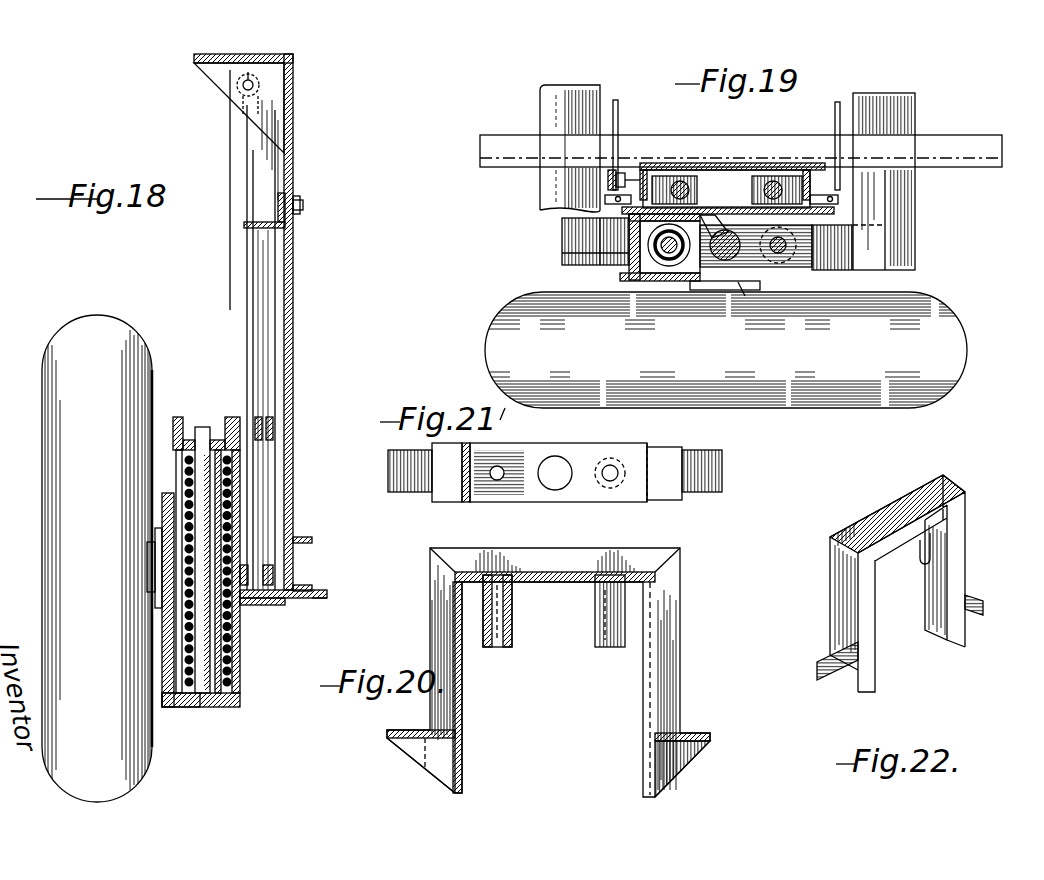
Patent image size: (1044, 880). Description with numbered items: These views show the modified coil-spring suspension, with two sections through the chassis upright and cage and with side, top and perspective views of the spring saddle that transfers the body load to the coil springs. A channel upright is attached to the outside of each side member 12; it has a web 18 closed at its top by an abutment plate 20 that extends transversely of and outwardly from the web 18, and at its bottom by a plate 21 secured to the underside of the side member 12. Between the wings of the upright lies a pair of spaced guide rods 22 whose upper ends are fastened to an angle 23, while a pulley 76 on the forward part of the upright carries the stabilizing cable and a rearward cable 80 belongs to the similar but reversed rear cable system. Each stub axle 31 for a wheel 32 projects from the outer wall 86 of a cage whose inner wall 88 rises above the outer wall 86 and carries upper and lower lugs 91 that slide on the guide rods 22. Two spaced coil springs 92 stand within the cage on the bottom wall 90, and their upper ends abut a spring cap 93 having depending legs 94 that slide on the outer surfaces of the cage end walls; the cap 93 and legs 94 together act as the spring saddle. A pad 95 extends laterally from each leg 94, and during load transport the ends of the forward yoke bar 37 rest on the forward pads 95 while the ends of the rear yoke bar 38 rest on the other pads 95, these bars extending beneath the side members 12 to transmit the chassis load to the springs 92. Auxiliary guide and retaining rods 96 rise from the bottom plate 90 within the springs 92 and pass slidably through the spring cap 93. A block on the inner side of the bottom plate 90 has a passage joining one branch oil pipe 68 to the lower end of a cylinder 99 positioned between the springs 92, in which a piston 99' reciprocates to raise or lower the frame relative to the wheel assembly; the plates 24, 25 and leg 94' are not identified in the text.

In FIG. 18, the side member 12 is at (312, 540).
In FIG. 19, the side member 12 is at (975, 140).
In FIG. 18, the web 18 is at (293, 342).
In FIG. 19, the web 18 is at (710, 165).
In FIG. 18, the abutment plate 20 is at (286, 56).
In FIG. 18, the plate 21 is at (322, 600).
In FIG. 19, the plate 21 is at (494, 424).
In FIG. 18, the guide rods 22 is at (258, 312).
In FIG. 19, the guide rods 22 is at (680, 180).
In FIG. 18, the angle 23 is at (292, 230).
In FIG. 18, the plate 24 is at (298, 600).
In FIG. 18, the plate 25 is at (262, 606).
In FIG. 18, the stub axle 31 is at (150, 578).
In FIG. 19, the stub axle 31 is at (750, 282).
In FIG. 18, the wheel 32 is at (42, 452).
In FIG. 19, the wheel 32 is at (790, 409).
In FIG. 19, the forward yoke bar 37 is at (540, 110).
In FIG. 19, the rear yoke bar 38 is at (915, 110).
In FIG. 19, the branch pipe 68 is at (708, 225).
In FIG. 18, the pulley 76 is at (232, 97).
In FIG. 19, the cable 80 is at (841, 105).
In FIG. 18, the outer wall 86 is at (162, 646).
In FIG. 18, the inner wall 88 is at (230, 656).
In FIG. 18, the bottom wall 90 is at (220, 708).
In FIG. 18, the lugs 91 is at (273, 428).
In FIG. 18, the coil springs 92 is at (222, 520).
In FIG. 19, the coil springs 92 is at (673, 256).
In FIG. 18, the spring cap 93 is at (228, 420).
In FIG. 21, the spring cap 93 is at (533, 445).
In FIG. 22, the spring cap 93 is at (905, 520).
In FIG. 21, the depending legs 94 is at (557, 476).
In FIG. 20, the depending legs 94 is at (548, 672).
In FIG. 22, the depending legs 94 is at (892, 583).
In FIG. 20, the frame member 94' is at (663, 615).
In FIG. 19, the pad 95 is at (565, 240).
In FIG. 21, the pad 95 is at (416, 495).
In FIG. 20, the pad 95 is at (410, 745).
In FIG. 22, the pad 95 is at (850, 680).
In FIG. 18, the auxiliary guide and retaining rods 96 is at (194, 708).
In FIG. 19, the auxiliary guide and retaining rods 96 is at (665, 266).
In FIG. 19, the cylinder 99 is at (721, 295).
In FIG. 19, the piston 99' is at (751, 332).